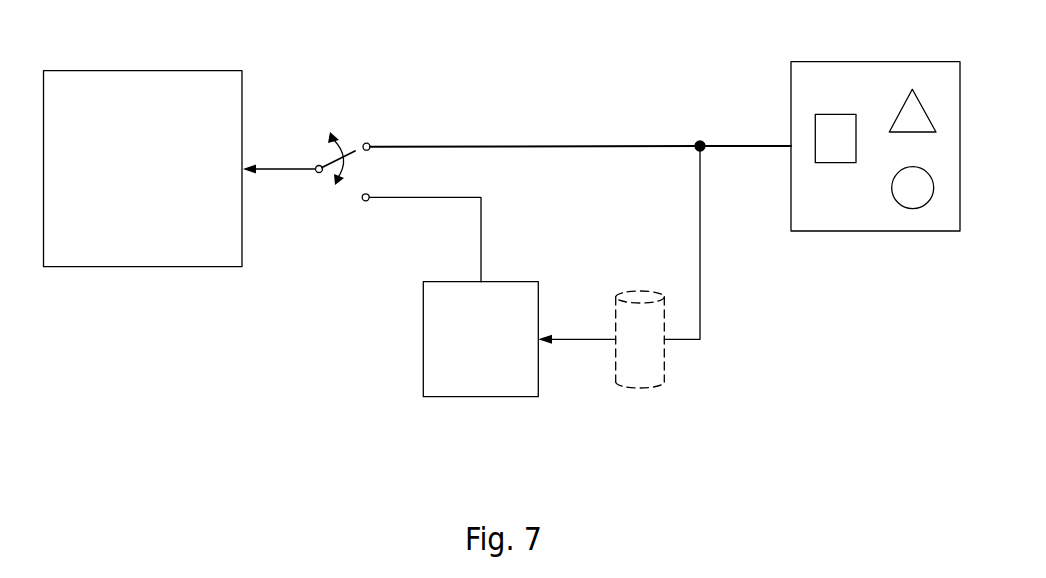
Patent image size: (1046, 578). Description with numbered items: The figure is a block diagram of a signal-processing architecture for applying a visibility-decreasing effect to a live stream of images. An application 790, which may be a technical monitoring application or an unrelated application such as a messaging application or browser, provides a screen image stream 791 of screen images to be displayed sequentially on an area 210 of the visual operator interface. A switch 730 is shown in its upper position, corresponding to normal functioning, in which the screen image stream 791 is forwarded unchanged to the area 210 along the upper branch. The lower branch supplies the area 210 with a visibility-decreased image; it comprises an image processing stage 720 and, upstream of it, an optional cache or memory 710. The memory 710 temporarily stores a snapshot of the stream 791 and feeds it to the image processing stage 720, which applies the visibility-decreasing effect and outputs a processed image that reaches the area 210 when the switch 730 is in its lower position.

The area of the visual operator interface 210 is at (90, 70).
The switch 730 is at (318, 173).
The screen image stream 791 is at (737, 145).
The application 790 is at (860, 61).
The image processing stage 720 is at (486, 397).
The memory 710 is at (632, 388).